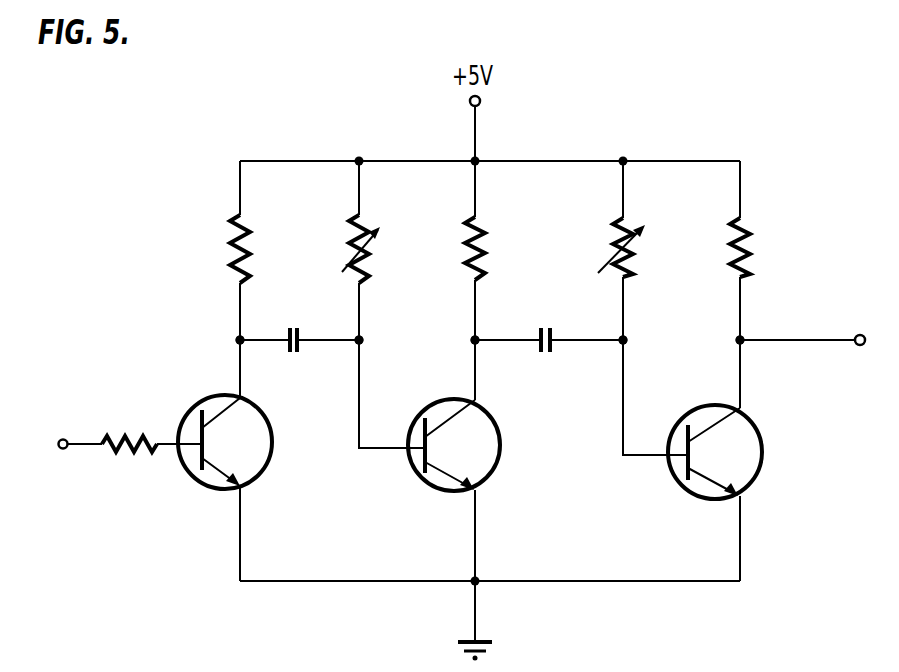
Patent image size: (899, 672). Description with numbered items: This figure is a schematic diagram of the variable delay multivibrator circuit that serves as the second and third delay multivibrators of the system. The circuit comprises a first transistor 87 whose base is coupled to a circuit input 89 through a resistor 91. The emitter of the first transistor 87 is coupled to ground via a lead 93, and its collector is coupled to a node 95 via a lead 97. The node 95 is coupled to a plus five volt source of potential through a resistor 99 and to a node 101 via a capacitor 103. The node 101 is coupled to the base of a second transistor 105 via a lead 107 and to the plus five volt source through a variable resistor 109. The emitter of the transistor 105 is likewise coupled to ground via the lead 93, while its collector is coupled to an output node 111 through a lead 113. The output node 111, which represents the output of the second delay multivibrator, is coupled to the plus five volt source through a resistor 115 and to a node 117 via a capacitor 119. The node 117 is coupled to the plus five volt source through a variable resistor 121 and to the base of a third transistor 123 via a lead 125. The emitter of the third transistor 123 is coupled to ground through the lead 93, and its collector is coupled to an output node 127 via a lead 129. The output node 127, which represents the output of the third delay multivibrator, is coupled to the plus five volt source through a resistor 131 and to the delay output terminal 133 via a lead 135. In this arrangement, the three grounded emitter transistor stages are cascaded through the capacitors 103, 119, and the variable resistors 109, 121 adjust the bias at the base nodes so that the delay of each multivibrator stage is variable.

The first transistor 87 is at (273, 442).
The circuit input 89 is at (66, 440).
The resistor 91 is at (112, 440).
The lead 93 is at (477, 612).
The node 95 is at (239, 339).
The lead 97 is at (238, 373).
The resistor 99 is at (250, 263).
The node 101 is at (364, 340).
The capacitor 103 is at (293, 330).
The transistor 105 is at (500, 440).
The lead 107 is at (359, 391).
The variable resistor 109 is at (369, 264).
The output node 111 is at (474, 340).
The lead 113 is at (475, 373).
The resistor 115 is at (485, 263).
The node 117 is at (626, 340).
The capacitor 119 is at (545, 328).
The variable resistor 121 is at (633, 264).
The third transistor 123 is at (762, 445).
The lead 125 is at (623, 388).
The output node 127 is at (736, 340).
The lead 129 is at (740, 374).
The resistor 131 is at (750, 264).
The delay output terminal 133 is at (856, 335).
The lead 135 is at (769, 340).